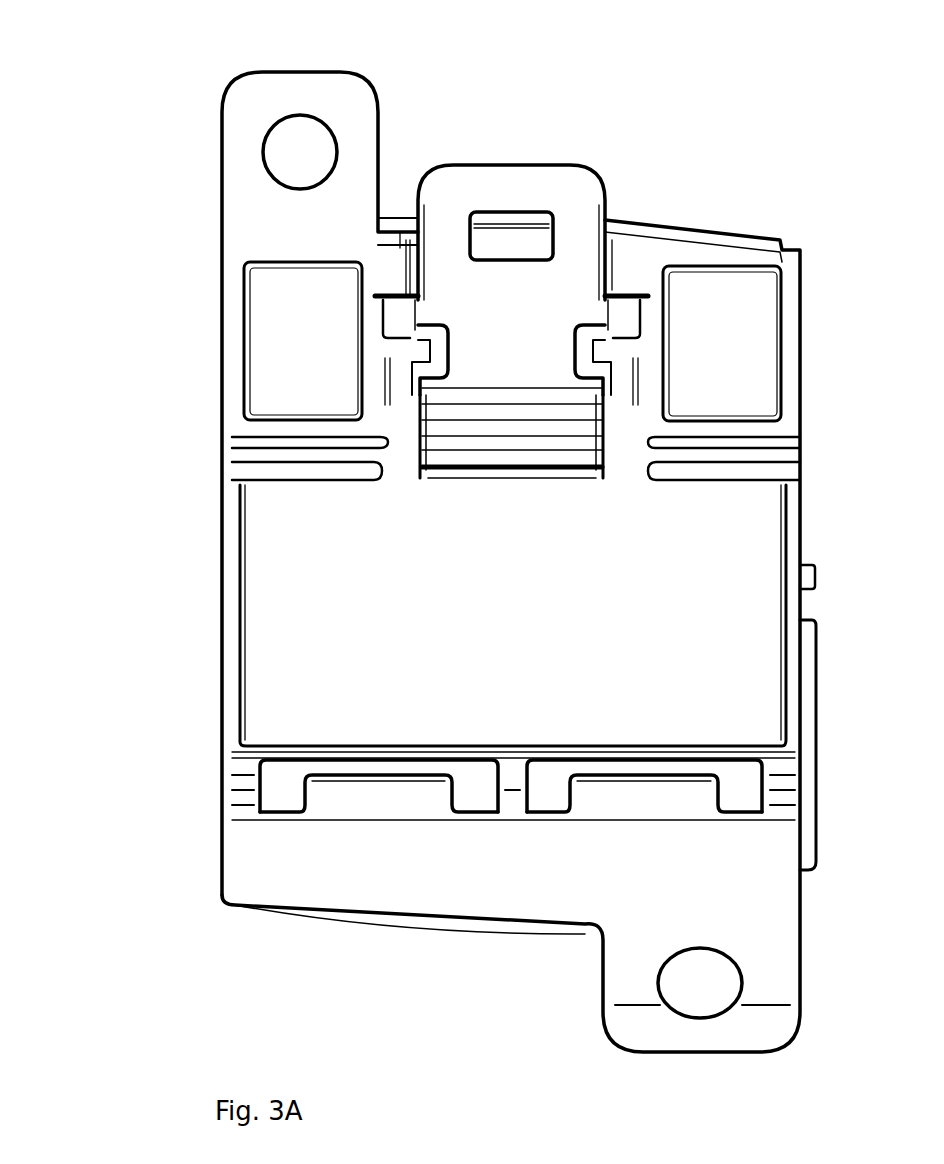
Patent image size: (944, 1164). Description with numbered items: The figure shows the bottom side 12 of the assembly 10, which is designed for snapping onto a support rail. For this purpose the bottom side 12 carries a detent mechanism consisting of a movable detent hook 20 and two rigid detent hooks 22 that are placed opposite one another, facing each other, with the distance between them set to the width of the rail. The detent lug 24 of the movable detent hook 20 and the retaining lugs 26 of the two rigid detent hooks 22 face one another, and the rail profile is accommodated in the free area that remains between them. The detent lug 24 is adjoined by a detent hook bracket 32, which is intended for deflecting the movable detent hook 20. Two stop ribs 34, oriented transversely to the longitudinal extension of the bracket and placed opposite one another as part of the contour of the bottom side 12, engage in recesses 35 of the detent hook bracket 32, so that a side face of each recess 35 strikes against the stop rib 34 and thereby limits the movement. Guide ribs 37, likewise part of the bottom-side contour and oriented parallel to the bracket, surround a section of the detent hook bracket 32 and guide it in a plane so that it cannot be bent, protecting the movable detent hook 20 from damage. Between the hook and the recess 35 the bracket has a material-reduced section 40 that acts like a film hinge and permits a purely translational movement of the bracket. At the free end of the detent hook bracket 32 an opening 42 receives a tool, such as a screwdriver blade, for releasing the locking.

The assembly 10 is at (158, 175).
The bottom side 12 is at (265, 577).
The movable detent hook 20 is at (562, 165).
The rigid detent hook 22 is at (280, 790).
The detent lug 24 is at (500, 470).
The retaining lug 26 is at (482, 762).
The detent hook bracket 32 is at (483, 165).
The stop rib 34 is at (412, 357).
The recess 35 is at (453, 356).
The guide rib 37 is at (400, 248).
The material-reduced section 40 is at (448, 428).
The opening 42 is at (510, 245).